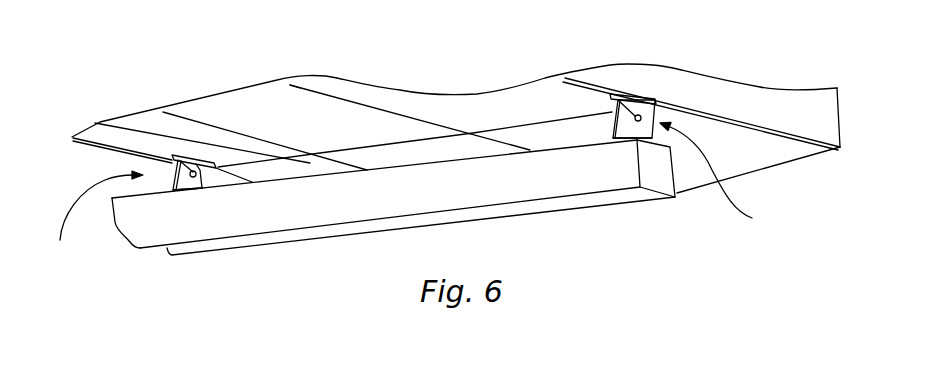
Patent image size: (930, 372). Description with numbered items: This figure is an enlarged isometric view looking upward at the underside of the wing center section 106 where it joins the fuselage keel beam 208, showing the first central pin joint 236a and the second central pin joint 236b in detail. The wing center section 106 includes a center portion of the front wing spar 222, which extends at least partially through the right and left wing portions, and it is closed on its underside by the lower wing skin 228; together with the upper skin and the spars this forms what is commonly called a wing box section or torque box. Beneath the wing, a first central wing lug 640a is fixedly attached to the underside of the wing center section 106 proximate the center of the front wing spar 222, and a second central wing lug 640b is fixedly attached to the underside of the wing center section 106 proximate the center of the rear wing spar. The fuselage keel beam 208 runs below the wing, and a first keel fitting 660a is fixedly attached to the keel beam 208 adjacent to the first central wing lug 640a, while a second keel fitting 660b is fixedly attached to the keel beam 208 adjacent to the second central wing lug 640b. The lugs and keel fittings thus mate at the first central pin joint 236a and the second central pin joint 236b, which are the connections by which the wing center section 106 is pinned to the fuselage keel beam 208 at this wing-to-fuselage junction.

The wing center section 106 is at (790, 158).
The fuselage keel beam 208 is at (143, 223).
The front wing spar 222 is at (812, 104).
The lower wing skin 228 is at (385, 123).
The first central pin joint 236a is at (726, 178).
The second central pin joint 236b is at (90, 220).
The first central wing lug 640a is at (660, 107).
The second central wing lug 640b is at (222, 180).
The first keel fitting 660a is at (612, 128).
The second keel fitting 660b is at (179, 191).